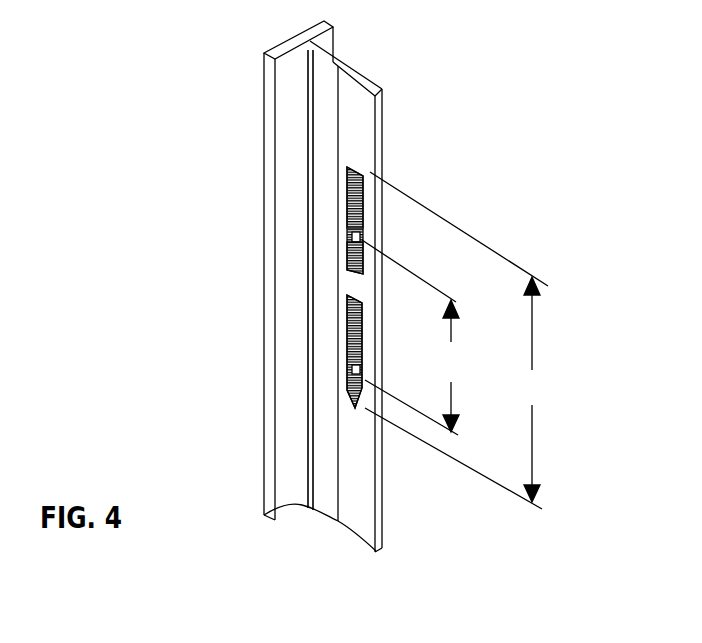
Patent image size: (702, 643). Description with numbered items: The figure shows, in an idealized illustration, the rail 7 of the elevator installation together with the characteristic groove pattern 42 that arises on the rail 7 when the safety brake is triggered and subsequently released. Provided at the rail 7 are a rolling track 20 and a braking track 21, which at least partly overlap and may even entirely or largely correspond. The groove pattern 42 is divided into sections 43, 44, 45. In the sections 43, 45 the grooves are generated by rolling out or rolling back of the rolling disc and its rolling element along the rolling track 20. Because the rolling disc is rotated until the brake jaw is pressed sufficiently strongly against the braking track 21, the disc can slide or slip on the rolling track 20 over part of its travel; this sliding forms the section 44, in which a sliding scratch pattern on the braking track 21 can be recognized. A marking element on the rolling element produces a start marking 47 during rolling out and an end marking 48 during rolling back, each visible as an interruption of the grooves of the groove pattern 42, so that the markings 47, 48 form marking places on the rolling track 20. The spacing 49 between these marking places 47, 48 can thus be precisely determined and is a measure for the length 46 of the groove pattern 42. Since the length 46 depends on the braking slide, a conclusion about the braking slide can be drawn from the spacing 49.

The rail 7 is at (290, 83).
The rolling track 20 is at (345, 516).
The braking track 21 is at (368, 542).
The groove pattern 42 is at (347, 188).
The section of the groove pattern 45 is at (347, 211).
The end marking 48 is at (347, 239).
The section of the groove pattern 44 is at (348, 287).
The section of the groove pattern 43 is at (347, 335).
The start marking 47 is at (347, 378).
The length of the groove pattern 46 is at (457, 340).
The spacing 49 is at (414, 337).